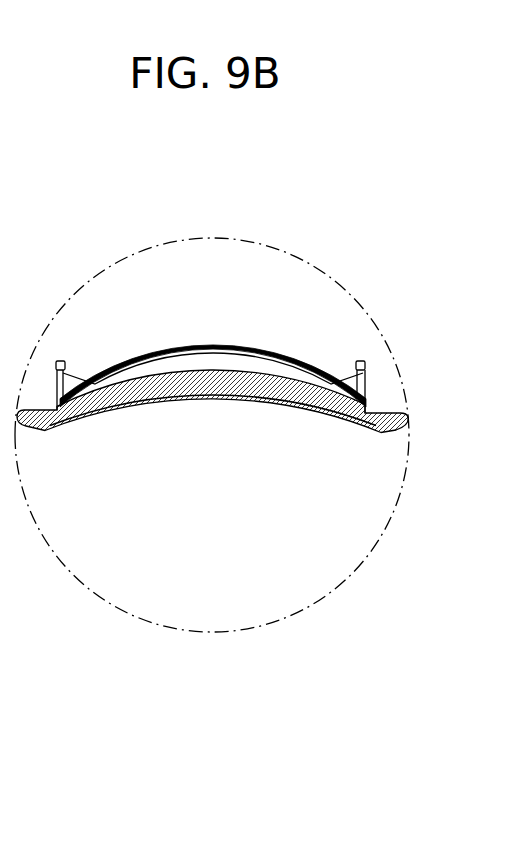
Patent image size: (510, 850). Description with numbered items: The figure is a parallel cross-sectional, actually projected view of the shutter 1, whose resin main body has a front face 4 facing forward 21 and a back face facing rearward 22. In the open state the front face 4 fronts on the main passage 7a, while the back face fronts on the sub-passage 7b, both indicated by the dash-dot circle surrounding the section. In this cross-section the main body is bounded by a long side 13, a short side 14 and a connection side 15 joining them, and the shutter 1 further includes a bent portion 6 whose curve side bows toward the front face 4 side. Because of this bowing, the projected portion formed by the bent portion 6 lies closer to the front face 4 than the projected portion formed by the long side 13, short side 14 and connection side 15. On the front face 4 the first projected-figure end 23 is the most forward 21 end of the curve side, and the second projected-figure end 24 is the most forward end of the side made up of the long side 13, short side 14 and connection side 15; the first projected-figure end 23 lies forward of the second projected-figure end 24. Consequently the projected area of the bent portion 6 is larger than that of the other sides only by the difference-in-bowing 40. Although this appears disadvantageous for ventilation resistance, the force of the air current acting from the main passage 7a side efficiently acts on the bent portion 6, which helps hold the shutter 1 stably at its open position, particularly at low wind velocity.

The shutter 1 is at (92, 424).
The front face 4 is at (61, 421).
The bent portion 6 is at (244, 377).
The main passage 7a is at (288, 570).
The sub-passage 7b is at (122, 295).
The long side 13 is at (260, 368).
The short side 14 is at (268, 356).
The connection side 15 is at (230, 346).
The forward 21 is at (234, 598).
The rearward 22 is at (220, 315).
The first projected-figure end 23 is at (213, 371).
The second projected-figure end 24 is at (217, 371).
The difference-in-bowing 40 is at (125, 402).